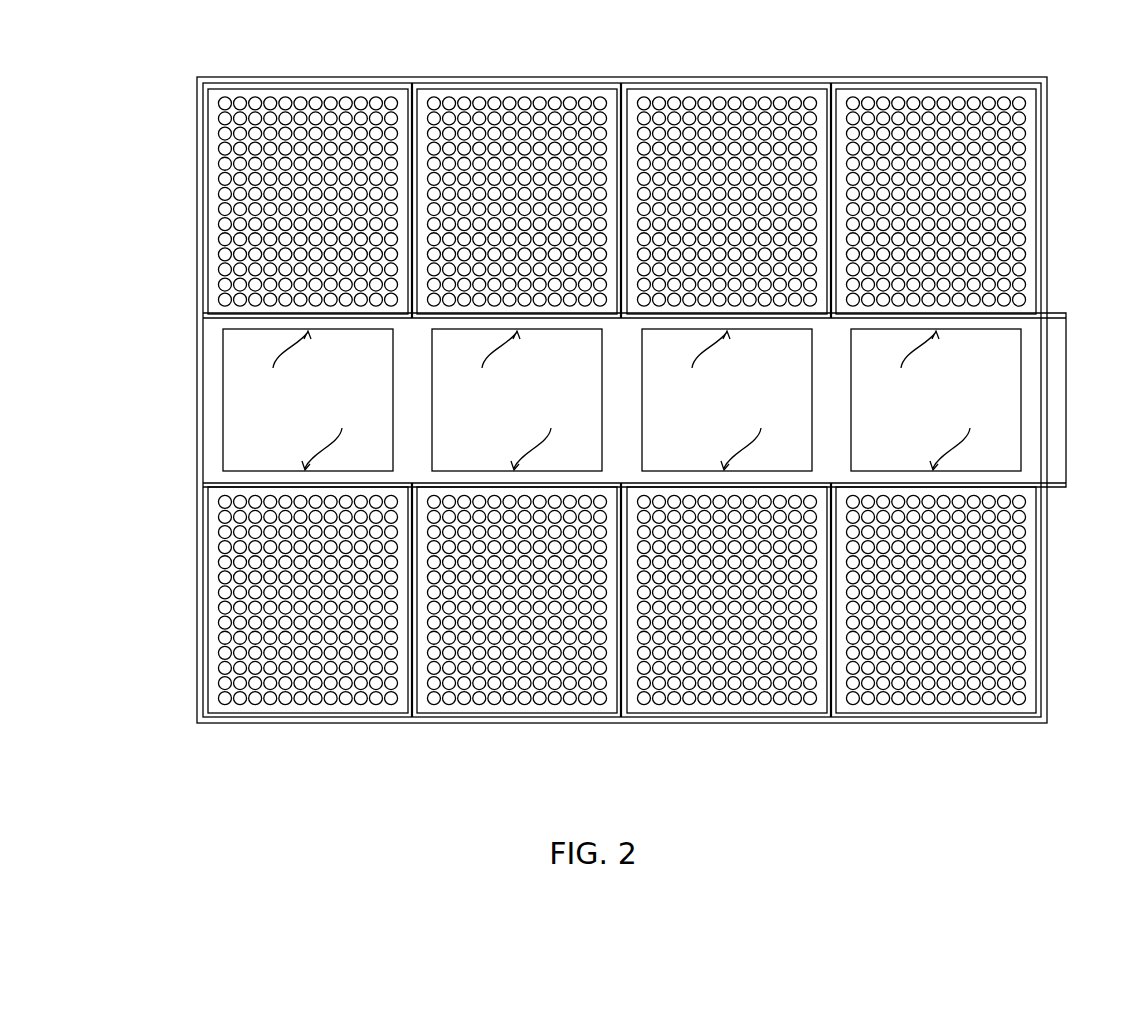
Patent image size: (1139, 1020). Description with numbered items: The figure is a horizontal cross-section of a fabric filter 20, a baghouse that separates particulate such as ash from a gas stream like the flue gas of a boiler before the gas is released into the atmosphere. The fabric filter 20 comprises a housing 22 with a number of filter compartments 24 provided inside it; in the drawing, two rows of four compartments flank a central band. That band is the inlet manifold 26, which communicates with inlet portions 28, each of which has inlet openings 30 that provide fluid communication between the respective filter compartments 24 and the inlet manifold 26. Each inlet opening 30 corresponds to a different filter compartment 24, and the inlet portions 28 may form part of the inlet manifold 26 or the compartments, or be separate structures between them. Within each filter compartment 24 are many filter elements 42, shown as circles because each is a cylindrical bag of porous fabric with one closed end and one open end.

The fabric filter 20 is at (181, 733).
The housing 22 is at (197, 175).
The filter compartment 24 is at (376, 83).
The inlet manifold 26 is at (1056, 313).
The inlet portion 28 is at (993, 379).
The inlet opening 30 is at (622, 400).
The filter element 42 is at (287, 97).